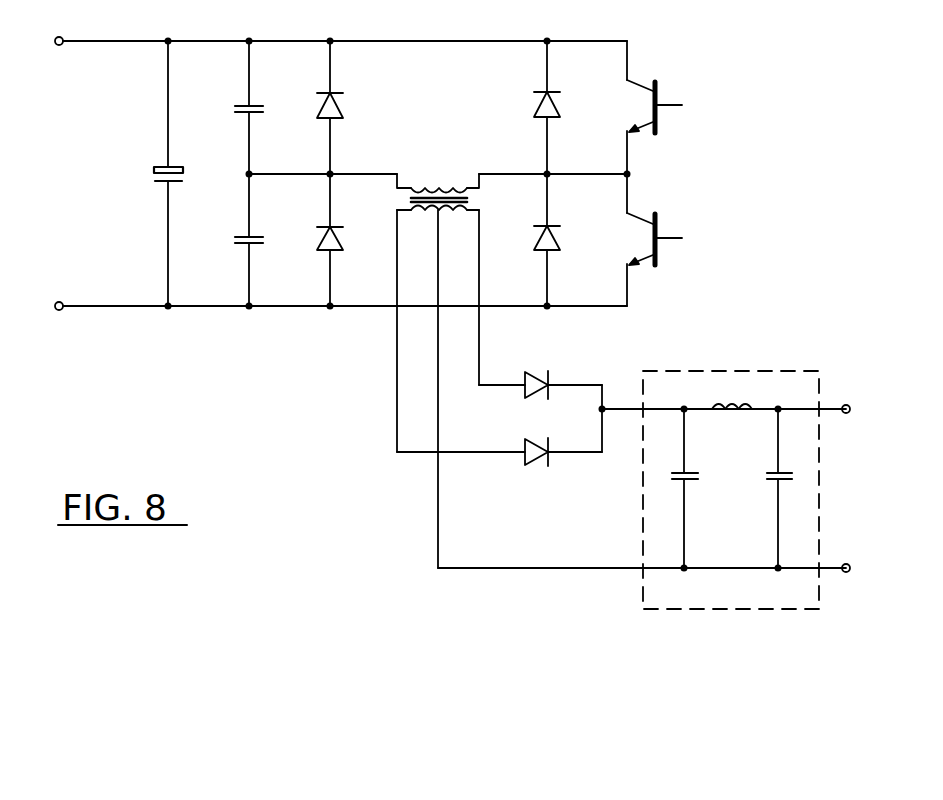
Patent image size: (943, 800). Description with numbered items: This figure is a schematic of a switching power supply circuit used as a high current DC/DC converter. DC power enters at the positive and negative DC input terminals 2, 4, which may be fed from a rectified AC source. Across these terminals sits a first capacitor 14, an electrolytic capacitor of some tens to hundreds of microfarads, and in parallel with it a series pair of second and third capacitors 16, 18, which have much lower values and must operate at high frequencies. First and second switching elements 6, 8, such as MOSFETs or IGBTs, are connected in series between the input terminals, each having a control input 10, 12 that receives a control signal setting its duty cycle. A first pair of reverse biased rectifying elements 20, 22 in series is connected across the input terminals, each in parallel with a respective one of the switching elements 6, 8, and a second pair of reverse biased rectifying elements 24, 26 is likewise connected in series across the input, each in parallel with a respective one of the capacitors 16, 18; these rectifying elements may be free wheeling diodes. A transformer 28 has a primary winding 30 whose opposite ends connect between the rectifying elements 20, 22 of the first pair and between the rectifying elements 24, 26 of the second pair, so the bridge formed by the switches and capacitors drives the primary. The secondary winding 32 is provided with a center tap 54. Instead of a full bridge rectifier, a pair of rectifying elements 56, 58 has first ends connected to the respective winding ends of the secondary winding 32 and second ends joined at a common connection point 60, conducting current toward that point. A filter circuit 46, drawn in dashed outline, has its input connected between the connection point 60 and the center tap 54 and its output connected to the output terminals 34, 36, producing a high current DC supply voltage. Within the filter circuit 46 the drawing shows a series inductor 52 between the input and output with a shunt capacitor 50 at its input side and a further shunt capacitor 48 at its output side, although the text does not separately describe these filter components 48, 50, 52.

The positive DC input terminal 2 is at (59, 46).
The negative DC input terminal 4 is at (59, 301).
The first switching element 6 is at (680, 92).
The second switching element 8 is at (680, 228).
The control input 10 is at (673, 107).
The control input 12 is at (673, 240).
The first capacitor 14 is at (168, 165).
The second capacitor 16 is at (247, 102).
The third capacitor 18 is at (249, 230).
The rectifying element 20 is at (534, 109).
The rectifying element 22 is at (563, 242).
The rectifying element 24 is at (320, 110).
The rectifying element 26 is at (318, 243).
The transformer 28 is at (451, 161).
The primary winding 30 is at (445, 190).
The secondary winding 32 is at (466, 210).
The output terminal 34 is at (845, 404).
The output terminal 36 is at (846, 563).
The filter circuit 46 is at (765, 380).
The capacitor 48 is at (773, 485).
The capacitor 50 is at (688, 480).
The inductor 52 is at (730, 412).
The center tap 54 is at (438, 215).
The rectifying element 56 is at (530, 373).
The rectifying element 58 is at (535, 437).
The connection point 60 is at (603, 408).